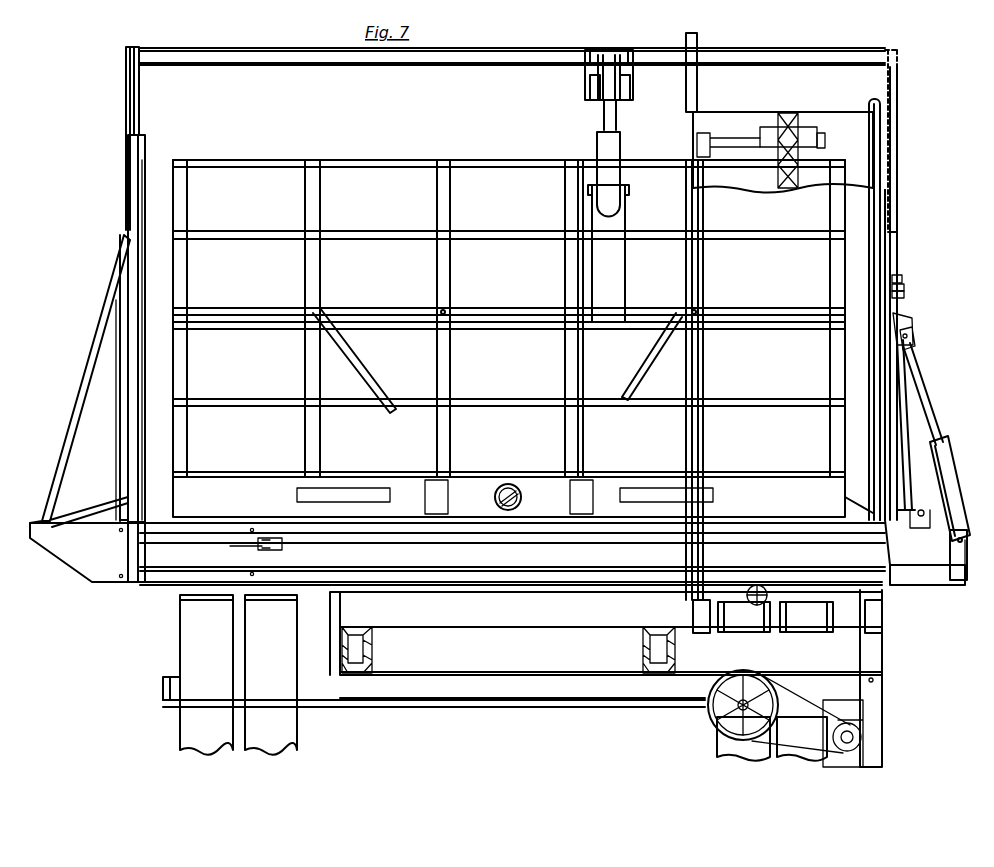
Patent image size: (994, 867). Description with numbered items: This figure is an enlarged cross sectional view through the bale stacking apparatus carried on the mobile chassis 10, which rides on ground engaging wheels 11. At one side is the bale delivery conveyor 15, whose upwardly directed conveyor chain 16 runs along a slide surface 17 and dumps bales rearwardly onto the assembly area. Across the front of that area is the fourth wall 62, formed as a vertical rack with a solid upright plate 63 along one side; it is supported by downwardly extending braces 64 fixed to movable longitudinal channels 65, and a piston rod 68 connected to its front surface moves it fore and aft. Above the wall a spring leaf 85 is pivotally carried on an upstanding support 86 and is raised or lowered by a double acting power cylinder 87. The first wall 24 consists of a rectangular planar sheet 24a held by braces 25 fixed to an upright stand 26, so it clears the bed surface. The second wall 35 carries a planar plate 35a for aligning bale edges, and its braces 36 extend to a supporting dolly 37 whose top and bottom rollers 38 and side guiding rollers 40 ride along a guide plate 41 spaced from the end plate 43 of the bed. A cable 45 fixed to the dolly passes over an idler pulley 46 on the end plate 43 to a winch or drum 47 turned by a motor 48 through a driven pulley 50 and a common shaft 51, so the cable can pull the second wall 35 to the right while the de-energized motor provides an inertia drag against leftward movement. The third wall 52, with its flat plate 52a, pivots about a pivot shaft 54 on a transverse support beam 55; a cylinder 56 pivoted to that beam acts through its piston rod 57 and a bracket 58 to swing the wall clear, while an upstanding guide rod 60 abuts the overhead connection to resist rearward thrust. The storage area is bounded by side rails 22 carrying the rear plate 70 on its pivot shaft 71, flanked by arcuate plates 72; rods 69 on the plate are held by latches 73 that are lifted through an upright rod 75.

The mobile chassis 10 is at (372, 642).
The ground engaging wheels 11 is at (522, 678).
The bale delivery conveyor 15 is at (835, 112).
The conveyor chain 16 is at (779, 112).
The slide surface 17 is at (783, 152).
The rails 22 is at (139, 112).
The first wall 24 is at (895, 256).
The rectangular planar sheet 24a is at (880, 214).
The braces 25 is at (905, 398).
The upright stand 26 is at (926, 552).
The second wall 35 is at (127, 181).
The planar plate 35a is at (140, 215).
The braces 36 is at (70, 449).
The supporting dolly 37 is at (100, 576).
The top and bottom rollers 38 is at (118, 532).
The side guiding rollers 40 is at (285, 544).
The guide plate 41 is at (512, 552).
The end plate 43 is at (158, 590).
The cable 45 is at (323, 578).
The idler pulley 46 is at (758, 584).
The winch or drum 47 is at (712, 708).
The motor 48 is at (830, 758).
The driven pulley 50 is at (718, 728).
The common shaft 51 is at (745, 703).
The third wall 52 is at (730, 112).
The flat plate 52a is at (810, 132).
The pivot shaft 54 is at (938, 505).
The transverse support beam 55 is at (940, 580).
The cylinder 56 is at (945, 462).
The piston rod 57 is at (928, 426).
The bracket 58 is at (912, 320).
The guide rod 60 is at (686, 85).
The fourth wall 62 is at (346, 162).
The solid upright plate 63 is at (755, 393).
The braces 64 is at (352, 375).
The longitudinal channels 65 is at (440, 488).
The piston rod 68 is at (494, 497).
The rods 69 is at (904, 283).
The rear plate 70 is at (498, 118).
The pivot shaft 71 is at (904, 291).
The arcuate plates 72 is at (125, 101).
The latches 73 is at (904, 269).
The upright rod 75 is at (120, 408).
The spring leaf 85 is at (592, 68).
The upstanding support 86 is at (600, 117).
The double acting power cylinder 87 is at (605, 136).